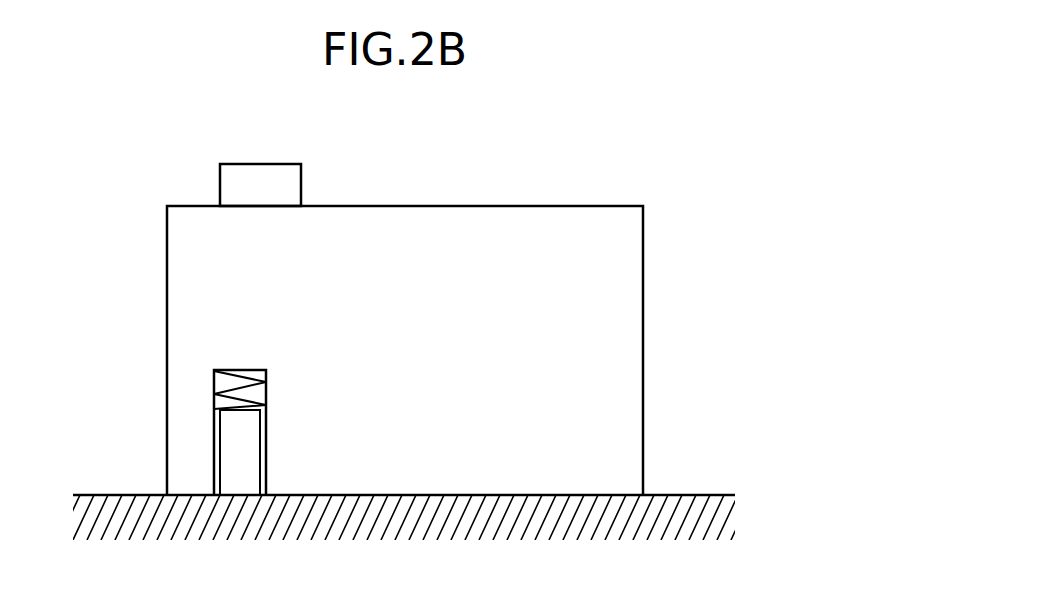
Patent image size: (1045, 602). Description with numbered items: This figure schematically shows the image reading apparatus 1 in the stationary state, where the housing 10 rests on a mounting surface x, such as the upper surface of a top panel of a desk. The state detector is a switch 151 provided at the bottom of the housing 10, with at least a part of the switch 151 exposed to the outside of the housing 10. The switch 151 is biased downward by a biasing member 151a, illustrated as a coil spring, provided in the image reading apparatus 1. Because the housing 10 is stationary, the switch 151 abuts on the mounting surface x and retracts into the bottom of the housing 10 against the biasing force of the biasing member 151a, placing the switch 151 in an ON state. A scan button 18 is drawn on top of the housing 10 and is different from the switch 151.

The image reading apparatus 1 is at (486, 162).
The housing 10 is at (609, 206).
The scan button 18 is at (281, 164).
The switch 151 is at (250, 469).
The biasing member 151a is at (251, 376).
The mounting surface x is at (688, 495).